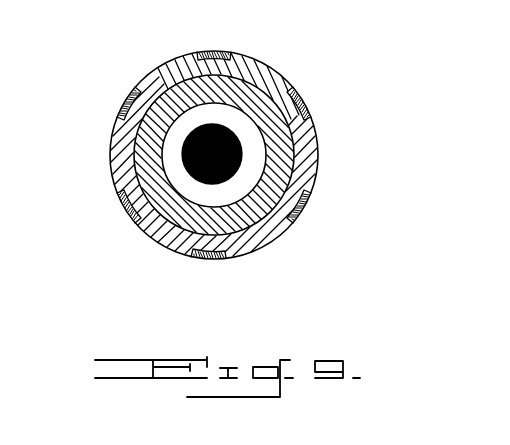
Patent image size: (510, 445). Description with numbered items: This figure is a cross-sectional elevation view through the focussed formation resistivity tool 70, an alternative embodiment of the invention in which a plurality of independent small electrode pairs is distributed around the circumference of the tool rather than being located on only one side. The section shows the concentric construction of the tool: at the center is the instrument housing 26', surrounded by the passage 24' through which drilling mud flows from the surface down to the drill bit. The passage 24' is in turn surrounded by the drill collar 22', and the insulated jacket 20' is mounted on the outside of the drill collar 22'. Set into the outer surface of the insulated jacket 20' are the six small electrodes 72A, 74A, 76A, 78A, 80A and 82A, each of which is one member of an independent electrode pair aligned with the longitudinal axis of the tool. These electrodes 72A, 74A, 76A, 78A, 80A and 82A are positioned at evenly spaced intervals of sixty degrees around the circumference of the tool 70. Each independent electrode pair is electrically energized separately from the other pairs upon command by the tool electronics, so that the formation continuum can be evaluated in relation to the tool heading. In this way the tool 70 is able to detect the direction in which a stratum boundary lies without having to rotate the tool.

The insulated jacket 20' is at (214, 139).
The drill collar 22' is at (222, 154).
The passage 24' is at (167, 155).
The instrument housing 26' is at (156, 121).
The focussed formation resistivity tool 70 is at (237, 150).
The electrode 72A is at (310, 112).
The electrode 74A is at (308, 200).
The electrode 76A is at (222, 260).
The electrode 78A is at (121, 214).
The electrode 80A is at (122, 100).
The electrode 82A is at (212, 57).